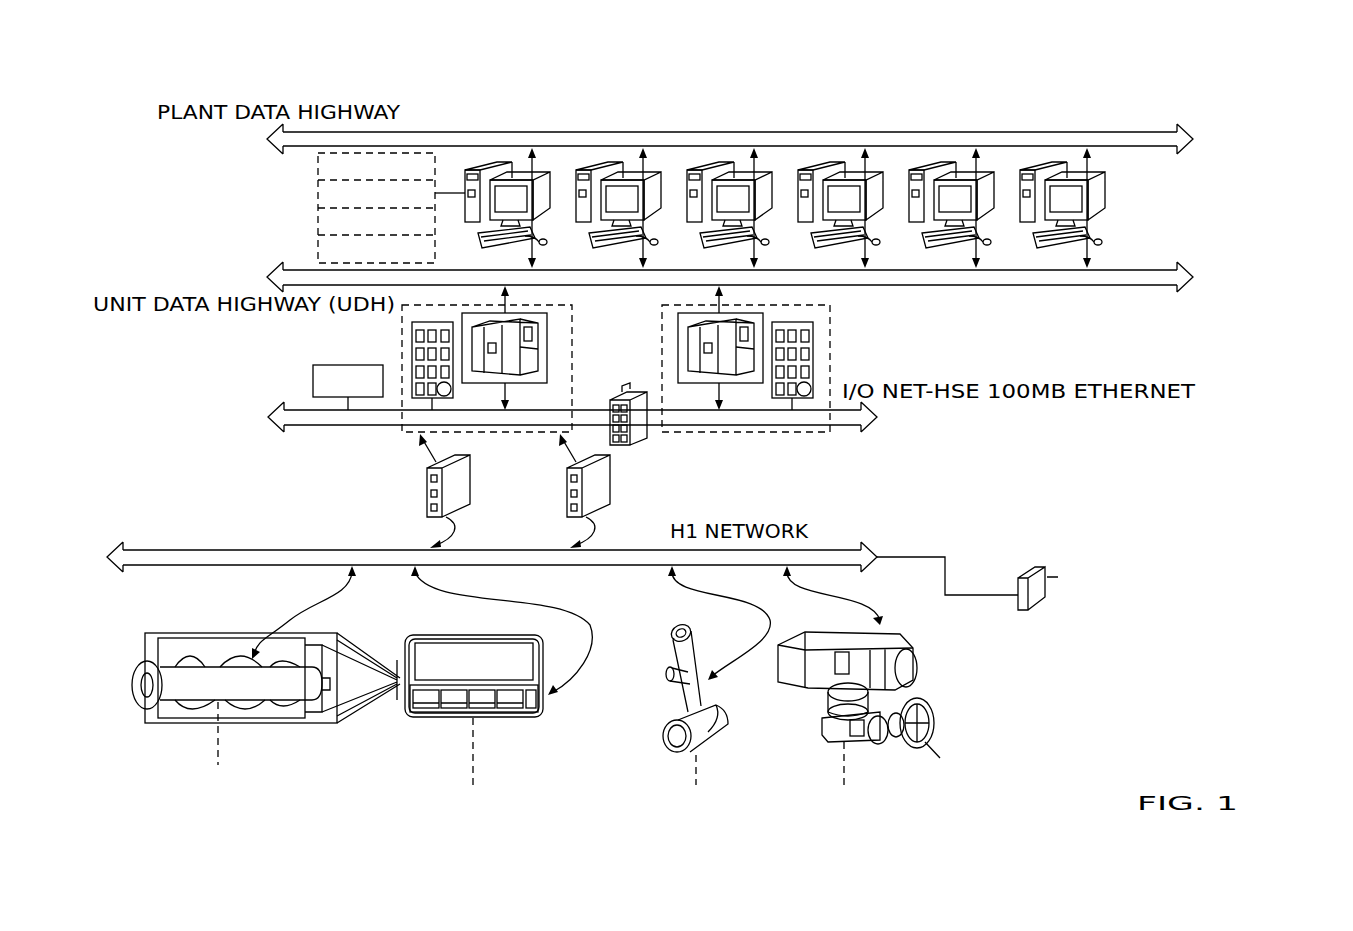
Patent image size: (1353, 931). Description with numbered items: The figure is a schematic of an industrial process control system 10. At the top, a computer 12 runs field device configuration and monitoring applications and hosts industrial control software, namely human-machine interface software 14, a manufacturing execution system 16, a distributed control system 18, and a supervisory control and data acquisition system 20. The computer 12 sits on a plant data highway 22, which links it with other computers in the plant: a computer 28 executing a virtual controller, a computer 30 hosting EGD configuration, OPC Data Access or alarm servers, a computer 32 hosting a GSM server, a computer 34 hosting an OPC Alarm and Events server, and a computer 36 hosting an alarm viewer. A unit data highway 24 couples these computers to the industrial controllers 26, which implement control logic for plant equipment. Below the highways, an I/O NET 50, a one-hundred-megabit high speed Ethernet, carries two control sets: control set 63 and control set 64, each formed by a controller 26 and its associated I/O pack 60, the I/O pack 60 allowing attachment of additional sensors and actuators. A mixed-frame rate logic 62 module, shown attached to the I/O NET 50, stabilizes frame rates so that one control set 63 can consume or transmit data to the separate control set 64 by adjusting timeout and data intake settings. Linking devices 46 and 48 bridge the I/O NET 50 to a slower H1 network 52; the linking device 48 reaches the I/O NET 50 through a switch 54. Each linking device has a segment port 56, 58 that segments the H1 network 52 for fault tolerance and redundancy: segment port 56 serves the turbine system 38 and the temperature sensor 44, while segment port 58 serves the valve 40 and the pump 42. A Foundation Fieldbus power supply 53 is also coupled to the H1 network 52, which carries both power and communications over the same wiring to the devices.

The industrial process control system 10 is at (1244, 71).
The computer 12 is at (480, 170).
The human-machine interface (HMI) software 14 is at (318, 172).
The manufacturing execution system (MES) 16 is at (318, 200).
The distributed control system (DCS) 18 is at (318, 227).
The supervisor control and data acquisition (SCADA) system 20 is at (318, 255).
The plant data highway 22 is at (1190, 131).
The unit data highway 24 is at (1190, 273).
The industrial controller 26 is at (676, 352).
The computer 28 is at (591, 170).
The computer 30 is at (702, 170).
The computer 32 is at (813, 170).
The computer 34 is at (924, 170).
The computer 36 is at (1035, 170).
The turbine system 38 is at (290, 728).
The valve 40 is at (706, 742).
The pump 42 is at (936, 735).
The temperature sensor 44 is at (498, 718).
The linking device 46 is at (465, 485).
The linking device 48 is at (605, 485).
The I/O NET 50 is at (878, 422).
The H1 network 52 is at (878, 549).
The Foundation Fieldbus power supply 53 is at (1021, 574).
The switch 54 is at (645, 445).
The segment port 56 is at (425, 518).
The segment port 58 is at (565, 518).
The I/O pack 60 is at (814, 355).
The mixed-frame rate logic 62 is at (347, 364).
The control set 63 is at (573, 313).
The control set 64 is at (832, 313).